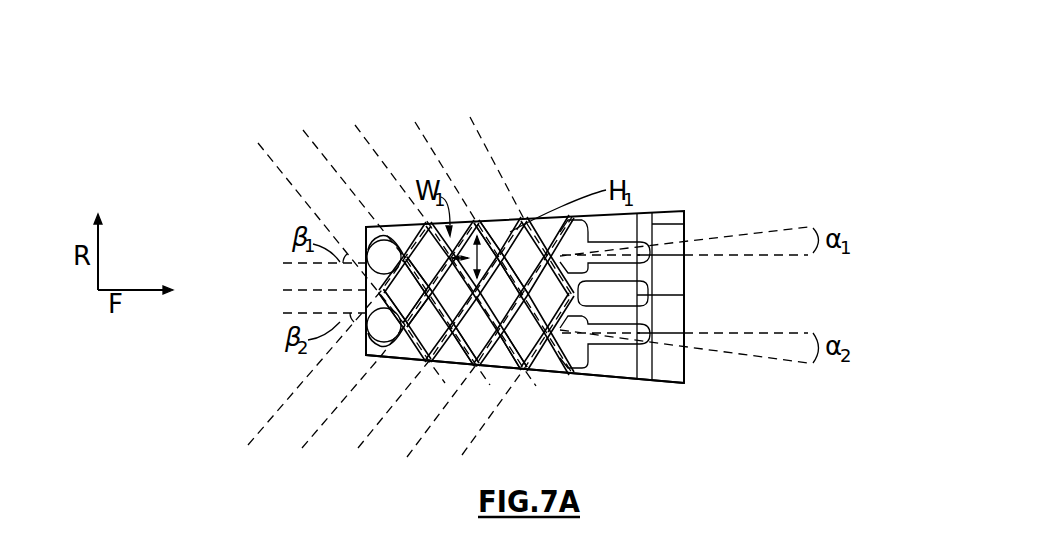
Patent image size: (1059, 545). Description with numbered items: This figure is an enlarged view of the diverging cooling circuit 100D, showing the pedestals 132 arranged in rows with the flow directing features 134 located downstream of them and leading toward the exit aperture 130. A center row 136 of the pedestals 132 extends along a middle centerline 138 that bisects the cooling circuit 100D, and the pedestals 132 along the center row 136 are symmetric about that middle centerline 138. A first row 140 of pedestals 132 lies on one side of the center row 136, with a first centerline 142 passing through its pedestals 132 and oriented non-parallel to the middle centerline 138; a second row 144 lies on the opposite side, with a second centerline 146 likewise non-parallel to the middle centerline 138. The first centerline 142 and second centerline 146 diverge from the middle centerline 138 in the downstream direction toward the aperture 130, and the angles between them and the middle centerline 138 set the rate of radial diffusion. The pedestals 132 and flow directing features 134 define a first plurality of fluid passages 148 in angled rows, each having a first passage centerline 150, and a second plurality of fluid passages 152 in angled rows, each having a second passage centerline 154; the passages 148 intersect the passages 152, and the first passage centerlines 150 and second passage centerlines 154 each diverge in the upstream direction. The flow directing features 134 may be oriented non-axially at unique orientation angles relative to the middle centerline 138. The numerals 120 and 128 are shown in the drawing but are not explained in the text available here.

The diverging cooling circuit 100D is at (640, 148).
The frame body 120 is at (563, 374).
The eyelet 128 is at (372, 238).
The aperture 130 is at (688, 375).
The pedestals 132 is at (502, 230).
The flow directing features 134 is at (640, 232).
The center row 136 is at (365, 281).
The middle centerline 138 is at (298, 292).
The first row 140 is at (408, 233).
The first centerline 142 is at (283, 262).
The second row 144 is at (404, 352).
The second centerline 146 is at (283, 314).
The first plurality of fluid passages 148 is at (488, 218).
The first passage centerline 150 is at (415, 122).
The second plurality of fluid passages 152 is at (498, 356).
The second passage centerline 154 is at (407, 458).